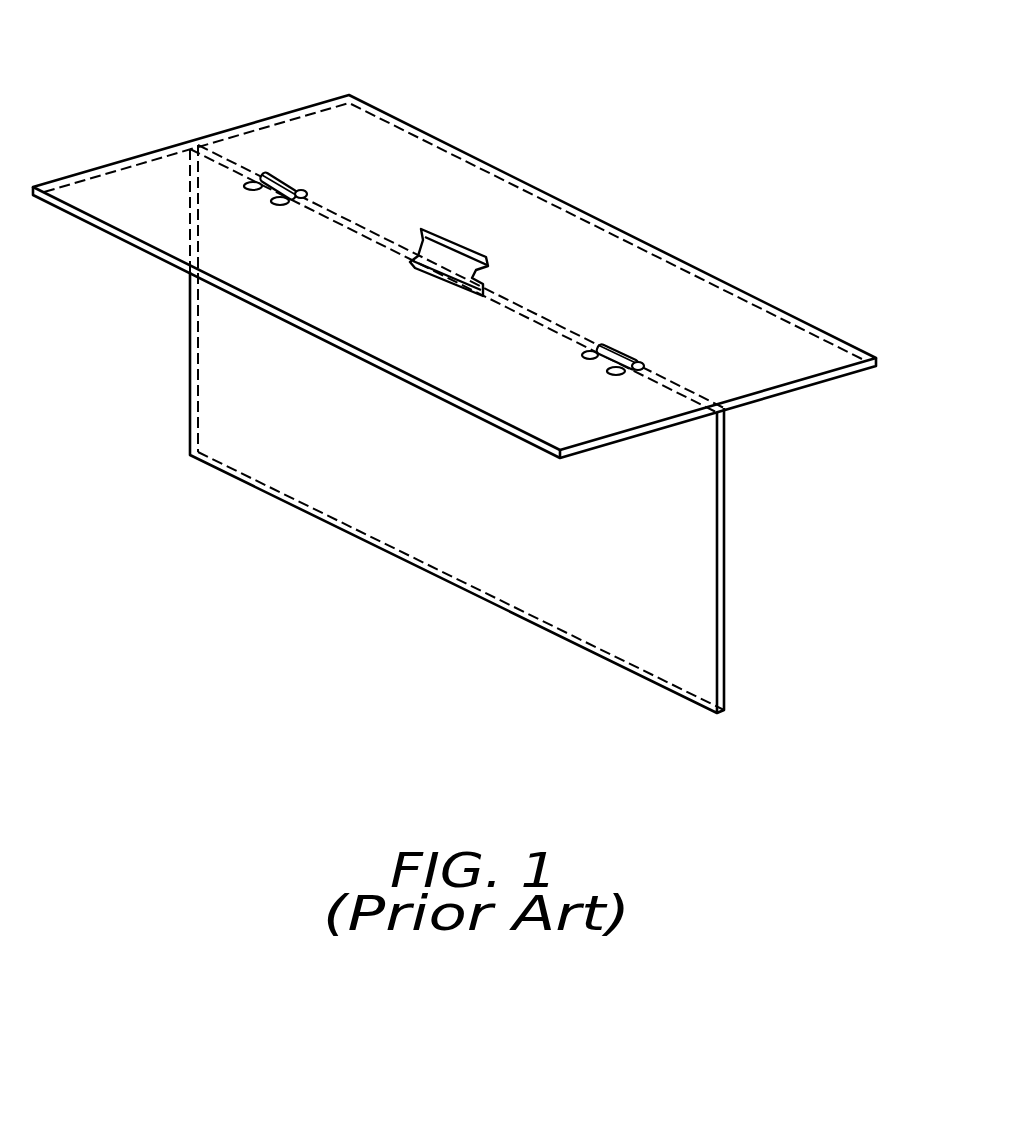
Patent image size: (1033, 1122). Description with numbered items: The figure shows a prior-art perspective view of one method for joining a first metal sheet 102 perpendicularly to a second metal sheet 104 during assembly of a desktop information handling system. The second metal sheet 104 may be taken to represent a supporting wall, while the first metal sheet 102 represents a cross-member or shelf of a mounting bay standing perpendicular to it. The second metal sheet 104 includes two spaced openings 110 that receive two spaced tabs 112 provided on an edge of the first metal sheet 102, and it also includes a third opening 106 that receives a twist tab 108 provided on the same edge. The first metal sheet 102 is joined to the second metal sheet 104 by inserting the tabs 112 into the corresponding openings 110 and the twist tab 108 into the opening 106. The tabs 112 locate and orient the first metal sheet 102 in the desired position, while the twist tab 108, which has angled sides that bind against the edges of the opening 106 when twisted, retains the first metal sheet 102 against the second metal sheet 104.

The first metal sheet 102 is at (725, 533).
The second metal sheet 104 is at (818, 383).
The third opening 106 is at (483, 292).
The twist tab 108 is at (462, 243).
The spaced openings 110 is at (305, 195).
The spaced tabs 112 is at (288, 182).